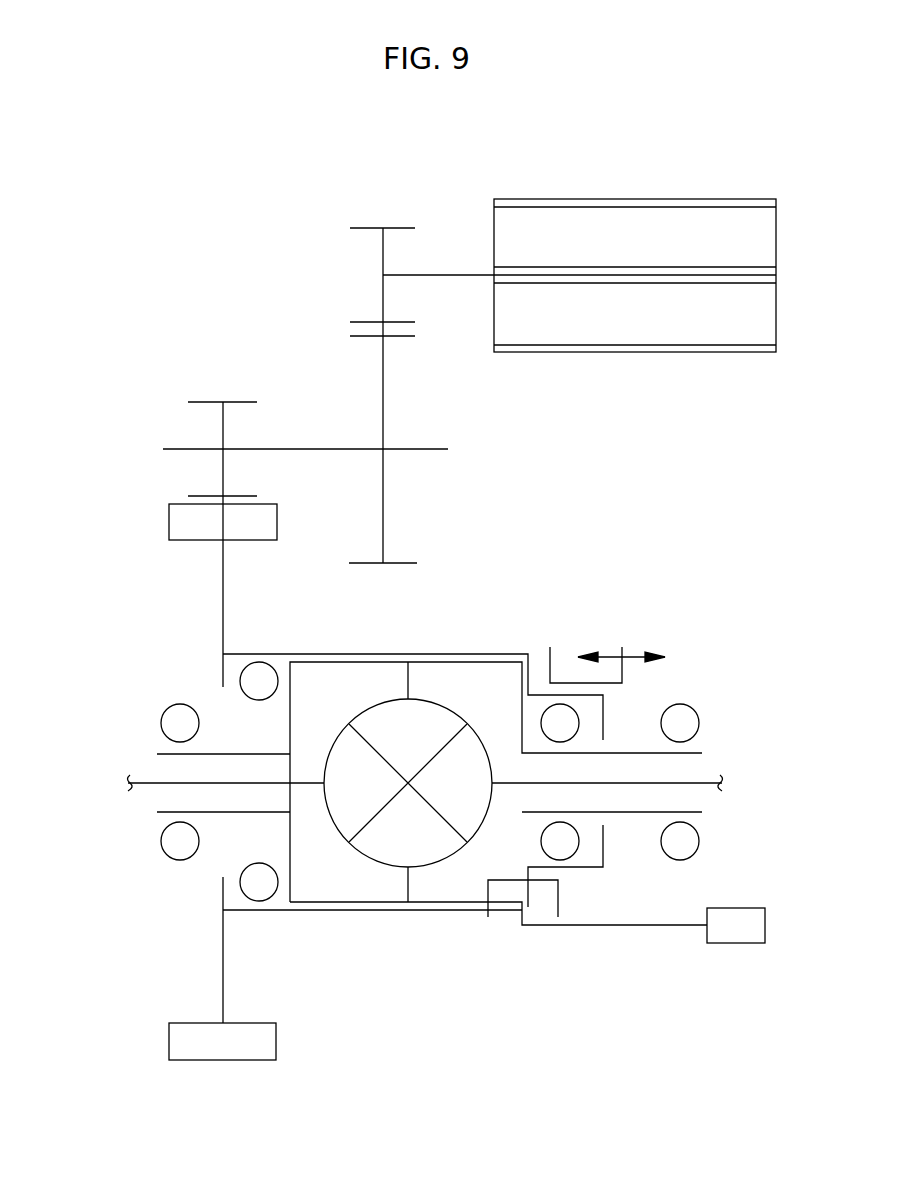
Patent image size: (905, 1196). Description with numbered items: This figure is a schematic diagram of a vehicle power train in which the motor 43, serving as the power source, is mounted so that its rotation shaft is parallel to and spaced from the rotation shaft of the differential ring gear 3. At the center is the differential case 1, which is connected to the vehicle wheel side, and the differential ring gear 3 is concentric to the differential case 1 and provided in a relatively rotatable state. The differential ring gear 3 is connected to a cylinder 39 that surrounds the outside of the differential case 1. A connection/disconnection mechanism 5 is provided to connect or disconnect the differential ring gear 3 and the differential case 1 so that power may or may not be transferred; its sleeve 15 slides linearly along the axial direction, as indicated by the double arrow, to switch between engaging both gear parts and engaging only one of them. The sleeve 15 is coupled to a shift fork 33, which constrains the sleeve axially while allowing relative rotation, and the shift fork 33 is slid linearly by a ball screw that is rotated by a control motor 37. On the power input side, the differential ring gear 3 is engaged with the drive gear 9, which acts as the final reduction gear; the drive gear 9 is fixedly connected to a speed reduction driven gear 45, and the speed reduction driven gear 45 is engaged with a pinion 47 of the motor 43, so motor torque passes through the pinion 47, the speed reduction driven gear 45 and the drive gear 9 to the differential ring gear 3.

The differential case 1 is at (480, 660).
The differential ring gear 3 is at (175, 523).
The connection/disconnection mechanism 5 is at (623, 636).
The drive gear 9 is at (202, 395).
The sleeve 15 is at (552, 653).
The shift fork 33 is at (560, 898).
The control motor 37 is at (737, 946).
The cylinder 39 is at (416, 912).
The motor 43 is at (634, 212).
The speed reduction driven gear 45 is at (360, 333).
The pinion 47 is at (370, 228).